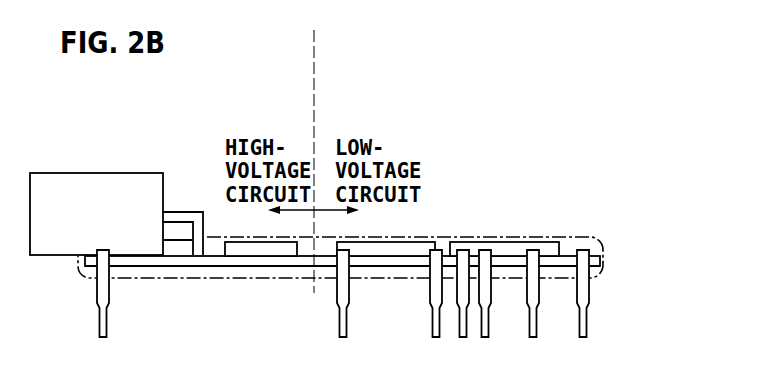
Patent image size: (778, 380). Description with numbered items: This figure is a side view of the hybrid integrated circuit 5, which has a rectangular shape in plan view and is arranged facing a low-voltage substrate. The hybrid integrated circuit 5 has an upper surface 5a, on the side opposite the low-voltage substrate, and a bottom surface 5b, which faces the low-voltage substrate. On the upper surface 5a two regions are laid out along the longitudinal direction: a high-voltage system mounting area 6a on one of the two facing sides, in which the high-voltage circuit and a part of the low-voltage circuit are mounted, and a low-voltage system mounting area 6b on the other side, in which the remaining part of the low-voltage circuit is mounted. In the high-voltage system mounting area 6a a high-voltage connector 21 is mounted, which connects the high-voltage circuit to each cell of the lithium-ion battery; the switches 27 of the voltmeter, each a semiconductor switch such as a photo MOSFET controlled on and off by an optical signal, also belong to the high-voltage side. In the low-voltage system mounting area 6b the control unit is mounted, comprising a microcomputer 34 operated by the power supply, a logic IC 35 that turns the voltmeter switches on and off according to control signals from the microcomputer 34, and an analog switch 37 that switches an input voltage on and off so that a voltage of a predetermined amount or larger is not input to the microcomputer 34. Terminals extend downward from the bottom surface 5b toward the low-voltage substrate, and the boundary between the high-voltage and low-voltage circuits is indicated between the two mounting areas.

The hybrid integrated circuit 5 is at (604, 258).
The upper surface 5a is at (128, 257).
The bottom surface 5b is at (130, 267).
The high-voltage system mounting area 6a is at (185, 197).
The low-voltage system mounting area 6b is at (476, 212).
The high-voltage connector 21 is at (85, 188).
The switches 27 is at (268, 255).
The microcomputer 34 is at (510, 255).
The logic IC 35 is at (395, 253).
The analog switch 37 is at (560, 222).